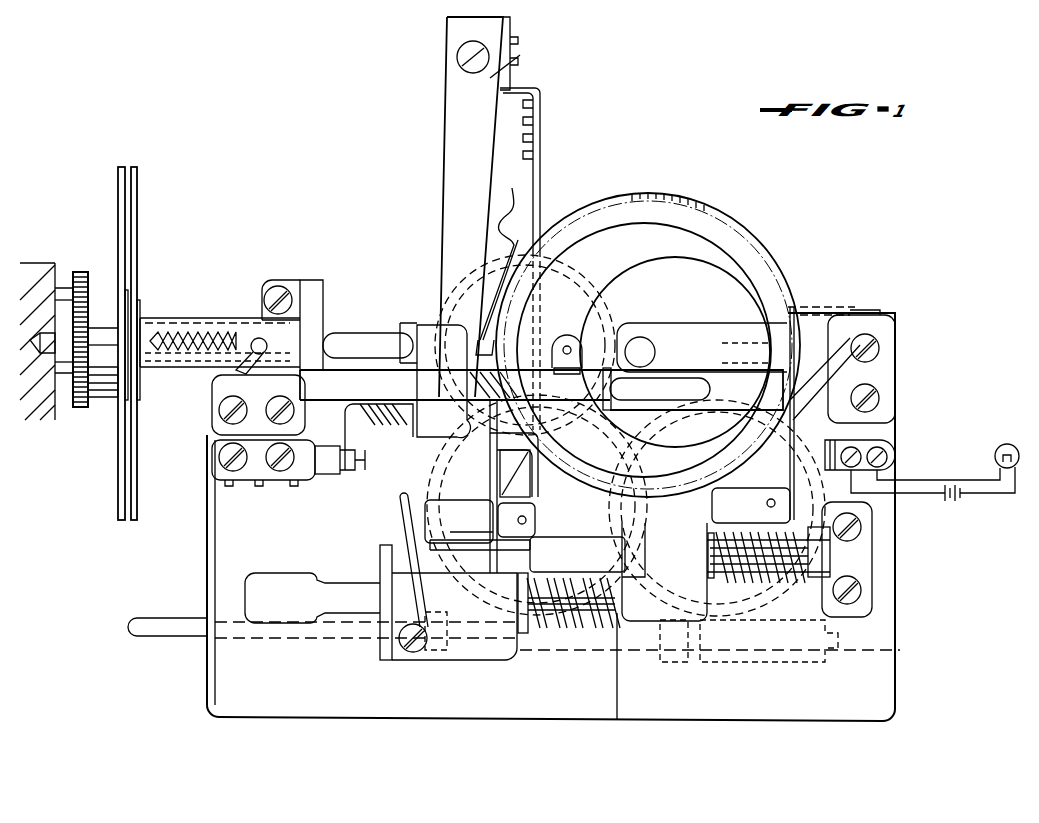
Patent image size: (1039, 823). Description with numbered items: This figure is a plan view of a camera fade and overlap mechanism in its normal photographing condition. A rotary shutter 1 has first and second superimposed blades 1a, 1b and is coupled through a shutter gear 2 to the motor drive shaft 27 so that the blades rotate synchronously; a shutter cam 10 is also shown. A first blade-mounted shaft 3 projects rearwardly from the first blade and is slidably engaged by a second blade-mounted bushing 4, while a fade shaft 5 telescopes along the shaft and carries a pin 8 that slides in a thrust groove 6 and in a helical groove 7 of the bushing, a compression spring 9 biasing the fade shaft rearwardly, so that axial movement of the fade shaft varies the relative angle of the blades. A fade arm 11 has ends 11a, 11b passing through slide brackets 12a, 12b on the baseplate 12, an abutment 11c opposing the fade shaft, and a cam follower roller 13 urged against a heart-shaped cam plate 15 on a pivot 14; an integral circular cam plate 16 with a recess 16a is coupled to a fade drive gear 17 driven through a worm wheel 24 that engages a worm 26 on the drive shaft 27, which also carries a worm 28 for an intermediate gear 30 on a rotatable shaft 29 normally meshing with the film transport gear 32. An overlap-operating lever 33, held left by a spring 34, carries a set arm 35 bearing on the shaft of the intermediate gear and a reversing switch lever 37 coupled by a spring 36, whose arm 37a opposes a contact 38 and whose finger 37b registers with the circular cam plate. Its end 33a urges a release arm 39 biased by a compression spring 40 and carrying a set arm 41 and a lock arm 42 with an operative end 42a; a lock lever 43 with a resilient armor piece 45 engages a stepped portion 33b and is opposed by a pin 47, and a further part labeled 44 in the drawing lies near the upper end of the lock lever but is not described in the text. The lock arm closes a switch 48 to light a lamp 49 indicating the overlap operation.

The rotary shutter 1 is at (110, 323).
The first blade 1a is at (116, 492).
The second blade 1b is at (137, 497).
The shutter gear 2 is at (78, 410).
The first blade-mounted shaft 3 is at (150, 322).
The second blade-mounted bushing 4 is at (208, 325).
The fade shaft 5 is at (345, 336).
The thrust groove 6 is at (180, 355).
The helical groove 7 is at (238, 374).
The pin 8 is at (257, 338).
The compression spring 9 is at (183, 330).
The shutter cam 10 is at (97, 410).
The fade arm 11 is at (325, 398).
The end of fade arm 11a is at (258, 405).
The end of fade arm 11b is at (705, 388).
The upper intermediate abutment 11c is at (418, 330).
The baseplate 12 is at (600, 724).
The slide bracket 12a is at (281, 454).
The slide bracket 12b is at (610, 408).
The cam follower roller 13 is at (572, 348).
The pivot 14 is at (641, 347).
The heart-shaped cam plate 15 is at (705, 278).
The circular cam plate 16 is at (690, 235).
The cam groove defining recess 16a is at (722, 342).
The fade drive gear 17 is at (714, 208).
The worm wheel 24 is at (875, 560).
The worm 26 is at (745, 660).
The drive shaft 27 is at (650, 655).
The worm 28 is at (535, 655).
The rotatable shaft 29 is at (506, 603).
The intermediate gear 30 is at (445, 660).
The gear 32 is at (490, 300).
The overlap-operating lever 33 is at (300, 578).
The end of lever 33a is at (545, 545).
The stepped portion 33b is at (450, 550).
The spring 34 is at (592, 640).
The cam-defining set arm 35 is at (450, 512).
The spring 36 is at (400, 580).
The reversing switch lever 37 is at (450, 437).
The arm 37a is at (345, 495).
The operative projection 37b is at (470, 330).
The contact 38 is at (328, 478).
The release arm 39 is at (672, 615).
The compression spring 40 is at (762, 580).
The cam-defining set arm 41 is at (751, 495).
The lock arm 42 is at (800, 425).
The operative end 42a is at (800, 314).
The lock lever 43 is at (541, 120).
The arm 44 is at (520, 62).
The resilient armor piece 45 is at (512, 200).
The pin 47 is at (500, 347).
The switch 48 is at (892, 455).
The lamp 49 is at (994, 458).